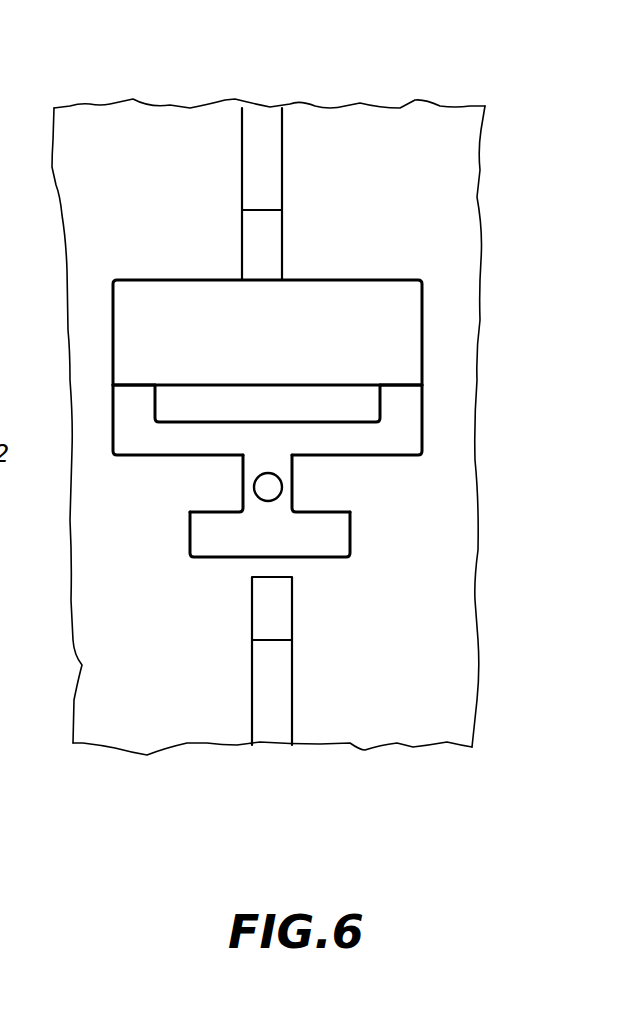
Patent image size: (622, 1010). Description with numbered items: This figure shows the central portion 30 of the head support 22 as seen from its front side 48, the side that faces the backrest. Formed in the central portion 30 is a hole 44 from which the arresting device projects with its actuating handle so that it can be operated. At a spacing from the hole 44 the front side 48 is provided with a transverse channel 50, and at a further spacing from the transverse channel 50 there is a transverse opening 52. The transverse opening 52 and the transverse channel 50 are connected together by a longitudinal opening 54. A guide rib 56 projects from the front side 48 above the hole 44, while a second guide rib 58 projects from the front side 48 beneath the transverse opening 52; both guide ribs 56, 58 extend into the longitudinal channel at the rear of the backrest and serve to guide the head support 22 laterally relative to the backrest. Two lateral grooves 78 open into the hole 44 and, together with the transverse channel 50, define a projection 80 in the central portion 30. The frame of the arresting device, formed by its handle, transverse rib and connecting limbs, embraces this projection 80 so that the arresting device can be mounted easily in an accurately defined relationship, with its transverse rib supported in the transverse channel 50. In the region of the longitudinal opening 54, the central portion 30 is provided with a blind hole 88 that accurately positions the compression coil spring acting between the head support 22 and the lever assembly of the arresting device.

The head support 22 is at (321, 95).
The central portion 30 is at (440, 603).
The hole 44 is at (397, 335).
The front side 48 is at (442, 505).
The transverse channel 50 is at (343, 436).
The transverse opening 52 is at (330, 545).
The longitudinal opening 54 is at (258, 468).
The guide rib 56 is at (263, 160).
The second guide rib 58 is at (282, 693).
The lateral grooves 78 is at (140, 410).
The projection 80 is at (235, 390).
The blind hole 88 is at (285, 483).